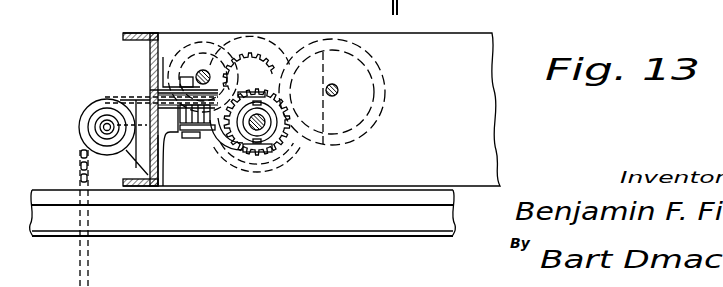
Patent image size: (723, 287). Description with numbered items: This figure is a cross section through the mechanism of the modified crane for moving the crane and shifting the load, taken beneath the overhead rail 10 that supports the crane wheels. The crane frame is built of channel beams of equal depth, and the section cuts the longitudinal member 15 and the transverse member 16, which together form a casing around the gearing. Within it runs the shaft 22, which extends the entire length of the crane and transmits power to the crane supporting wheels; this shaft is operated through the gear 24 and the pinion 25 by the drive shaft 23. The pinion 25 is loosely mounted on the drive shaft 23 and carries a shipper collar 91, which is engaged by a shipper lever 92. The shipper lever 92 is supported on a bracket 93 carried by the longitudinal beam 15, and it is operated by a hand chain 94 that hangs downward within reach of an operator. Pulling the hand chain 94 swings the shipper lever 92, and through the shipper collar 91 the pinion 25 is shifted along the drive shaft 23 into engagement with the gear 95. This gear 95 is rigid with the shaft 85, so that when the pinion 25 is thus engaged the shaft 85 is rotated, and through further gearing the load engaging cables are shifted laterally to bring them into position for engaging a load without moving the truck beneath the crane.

The overhead rail 10 is at (447, 205).
The longitudinal member 15 is at (150, 66).
The transverse member 16 is at (450, 186).
The shaft 22 is at (203, 70).
The drive shaft 23 is at (266, 130).
The gear 24 is at (250, 72).
The pinion 25 is at (268, 92).
The shaft 85 is at (338, 90).
The shipper collar 91 is at (285, 135).
The shipper lever 92 is at (208, 128).
The bracket 93 is at (178, 132).
The hand chain 94 is at (80, 160).
The gear 95 is at (268, 75).